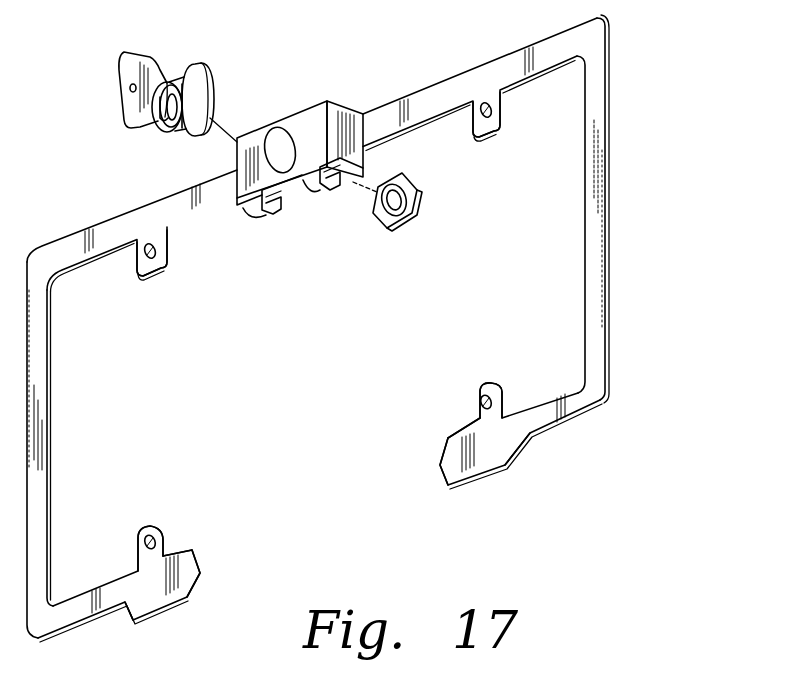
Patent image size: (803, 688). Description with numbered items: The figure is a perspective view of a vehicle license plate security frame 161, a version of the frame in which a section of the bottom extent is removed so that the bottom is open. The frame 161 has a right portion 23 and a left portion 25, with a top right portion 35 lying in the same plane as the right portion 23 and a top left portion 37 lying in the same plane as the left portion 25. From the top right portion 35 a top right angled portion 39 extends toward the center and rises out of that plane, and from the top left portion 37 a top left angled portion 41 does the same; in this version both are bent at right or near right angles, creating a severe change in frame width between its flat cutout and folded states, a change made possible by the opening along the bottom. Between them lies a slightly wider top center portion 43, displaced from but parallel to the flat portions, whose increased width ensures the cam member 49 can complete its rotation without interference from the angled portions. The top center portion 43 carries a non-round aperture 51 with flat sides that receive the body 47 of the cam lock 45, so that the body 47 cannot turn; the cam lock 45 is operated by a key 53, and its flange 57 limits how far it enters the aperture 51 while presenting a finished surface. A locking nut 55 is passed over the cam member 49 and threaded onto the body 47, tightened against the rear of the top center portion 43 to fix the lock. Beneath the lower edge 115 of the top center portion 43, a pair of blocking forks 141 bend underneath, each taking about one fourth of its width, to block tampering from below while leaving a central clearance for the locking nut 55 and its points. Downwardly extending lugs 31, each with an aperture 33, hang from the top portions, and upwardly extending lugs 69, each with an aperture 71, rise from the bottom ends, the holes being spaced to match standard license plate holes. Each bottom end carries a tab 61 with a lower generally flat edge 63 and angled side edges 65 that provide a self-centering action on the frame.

The right portion 23 is at (606, 164).
The left portion 25 is at (42, 465).
The downwardly extending lugs 31 is at (488, 131).
The aperture 33 is at (492, 108).
The top right portion 35 is at (445, 90).
The top left portion 37 is at (112, 232).
The top right angled portion 39 is at (350, 130).
The top left angled portion 41 is at (275, 214).
The top center portion 43 is at (308, 126).
The cam lock 45 is at (168, 82).
The body 47 is at (193, 128).
The cam member 49 is at (198, 70).
The aperture 51 is at (284, 153).
The key 53 is at (121, 68).
The locking nut 55 is at (418, 205).
The flange 57 is at (152, 126).
The tabs 61 is at (155, 600).
The lower generally flat edge 63 is at (185, 603).
The angled side edges 65 is at (198, 588).
The upwardly extending lugs 69 is at (163, 535).
The aperture 71 is at (148, 538).
The lower edge 115 is at (300, 207).
The blocking forks 141 is at (263, 214).
The frame 161 is at (630, 92).